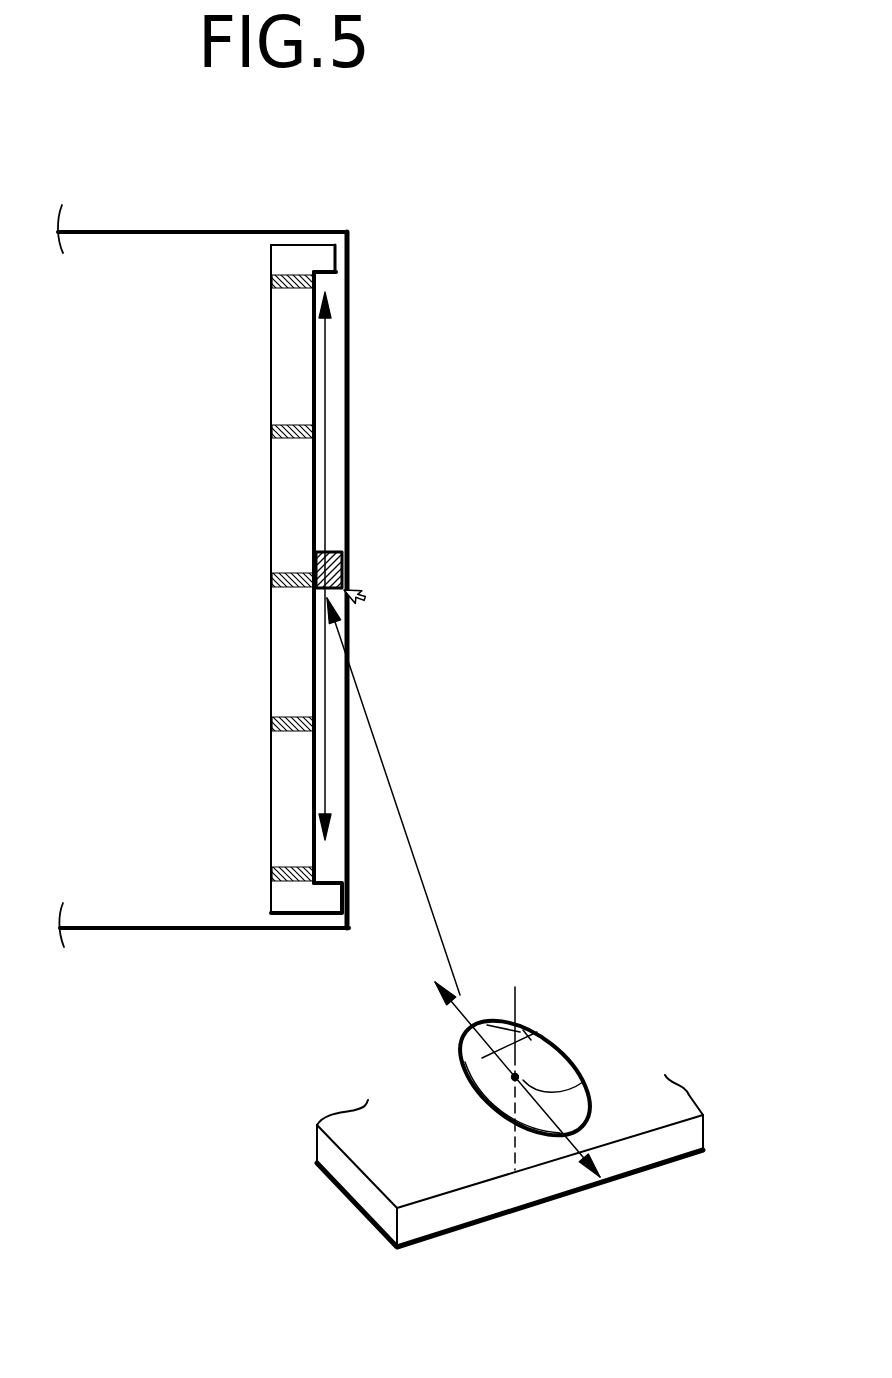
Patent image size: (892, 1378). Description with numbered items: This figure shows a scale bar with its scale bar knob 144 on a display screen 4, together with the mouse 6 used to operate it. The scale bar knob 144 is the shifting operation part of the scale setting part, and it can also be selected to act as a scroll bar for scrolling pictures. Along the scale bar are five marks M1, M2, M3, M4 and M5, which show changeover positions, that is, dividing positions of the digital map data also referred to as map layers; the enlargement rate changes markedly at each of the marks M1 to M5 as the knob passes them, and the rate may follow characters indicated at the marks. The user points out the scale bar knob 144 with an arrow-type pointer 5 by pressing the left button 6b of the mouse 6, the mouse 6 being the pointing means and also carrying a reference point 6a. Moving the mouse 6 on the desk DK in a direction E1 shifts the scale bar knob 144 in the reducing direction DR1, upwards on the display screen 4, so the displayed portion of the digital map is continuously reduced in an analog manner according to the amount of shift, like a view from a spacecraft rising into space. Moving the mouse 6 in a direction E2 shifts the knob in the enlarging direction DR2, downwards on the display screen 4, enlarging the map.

The display screen 4 is at (123, 253).
The mark M1 is at (272, 875).
The mark M2 is at (271, 725).
The mark M3 is at (271, 581).
The mark M4 is at (270, 432).
The mark M5 is at (270, 285).
The reducing direction DR1 is at (325, 358).
The enlarging direction DR2 is at (326, 783).
The scale bar knob 144 is at (342, 555).
The arrow-type pointer 5 is at (362, 600).
The mouse 6 is at (577, 1067).
The reference point of mouse 6a is at (525, 1035).
The left button 6b is at (493, 1040).
The direction E1 is at (457, 1015).
The direction E2 is at (568, 1143).
The desk DK is at (658, 1150).